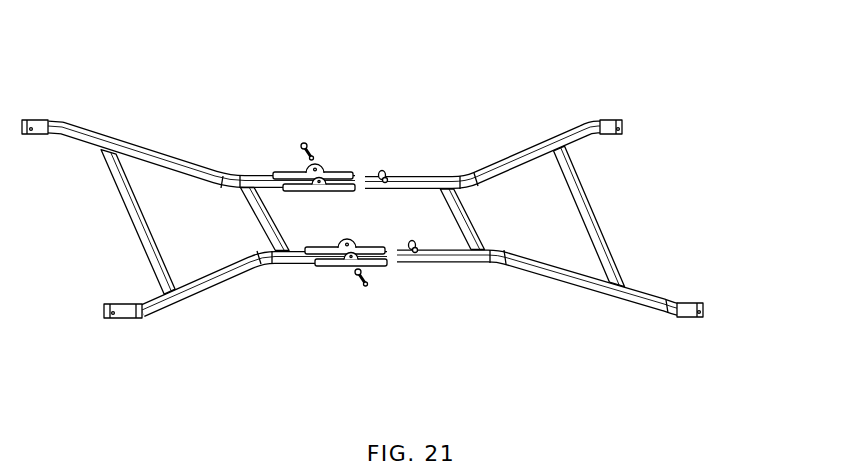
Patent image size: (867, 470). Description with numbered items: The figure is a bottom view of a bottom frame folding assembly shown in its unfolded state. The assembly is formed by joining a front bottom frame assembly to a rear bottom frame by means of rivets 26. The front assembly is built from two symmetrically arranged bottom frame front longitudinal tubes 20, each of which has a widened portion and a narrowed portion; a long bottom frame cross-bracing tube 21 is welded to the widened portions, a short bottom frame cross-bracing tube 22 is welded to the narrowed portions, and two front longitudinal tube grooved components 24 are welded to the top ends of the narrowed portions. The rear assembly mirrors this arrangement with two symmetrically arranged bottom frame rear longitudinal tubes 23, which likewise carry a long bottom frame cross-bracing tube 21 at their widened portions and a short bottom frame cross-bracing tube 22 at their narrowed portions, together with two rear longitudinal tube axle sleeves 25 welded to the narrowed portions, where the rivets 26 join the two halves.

The bottom frame front longitudinal tube 20 is at (28, 123).
The long bottom frame cross-bracing tube 21 is at (131, 165).
The short bottom frame cross-bracing tube 22 is at (263, 190).
The bottom frame rear longitudinal tube 23 is at (408, 180).
The front longitudinal tube grooved component 24 is at (312, 182).
The rear longitudinal tube axle sleeve 25 is at (415, 253).
The rivet 26 is at (305, 143).